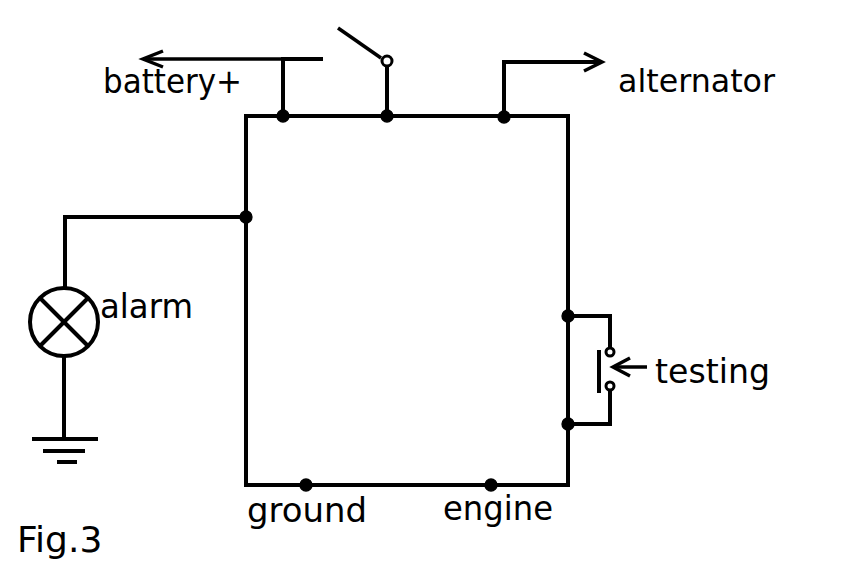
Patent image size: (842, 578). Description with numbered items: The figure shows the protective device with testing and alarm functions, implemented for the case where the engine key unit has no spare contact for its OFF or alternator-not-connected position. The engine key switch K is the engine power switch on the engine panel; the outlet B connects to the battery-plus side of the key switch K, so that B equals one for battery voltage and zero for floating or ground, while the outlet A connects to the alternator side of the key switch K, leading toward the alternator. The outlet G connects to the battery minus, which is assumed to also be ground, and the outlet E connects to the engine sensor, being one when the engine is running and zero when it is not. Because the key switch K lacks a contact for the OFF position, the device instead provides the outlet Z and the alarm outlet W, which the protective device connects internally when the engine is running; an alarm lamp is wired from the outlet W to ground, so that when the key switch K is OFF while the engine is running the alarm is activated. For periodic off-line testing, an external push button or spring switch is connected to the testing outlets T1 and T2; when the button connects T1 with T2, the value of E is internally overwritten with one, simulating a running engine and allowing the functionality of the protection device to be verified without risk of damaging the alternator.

The battery-side outlet B is at (288, 142).
The internal outlet Z is at (384, 120).
The engine key switch K is at (347, 35).
The alternator-side outlet A is at (499, 143).
The alarm outlet W is at (268, 223).
The first testing outlet T1 is at (545, 318).
The second testing outlet T2 is at (545, 420).
The ground outlet G is at (305, 462).
The engine sensor outlet E is at (487, 462).